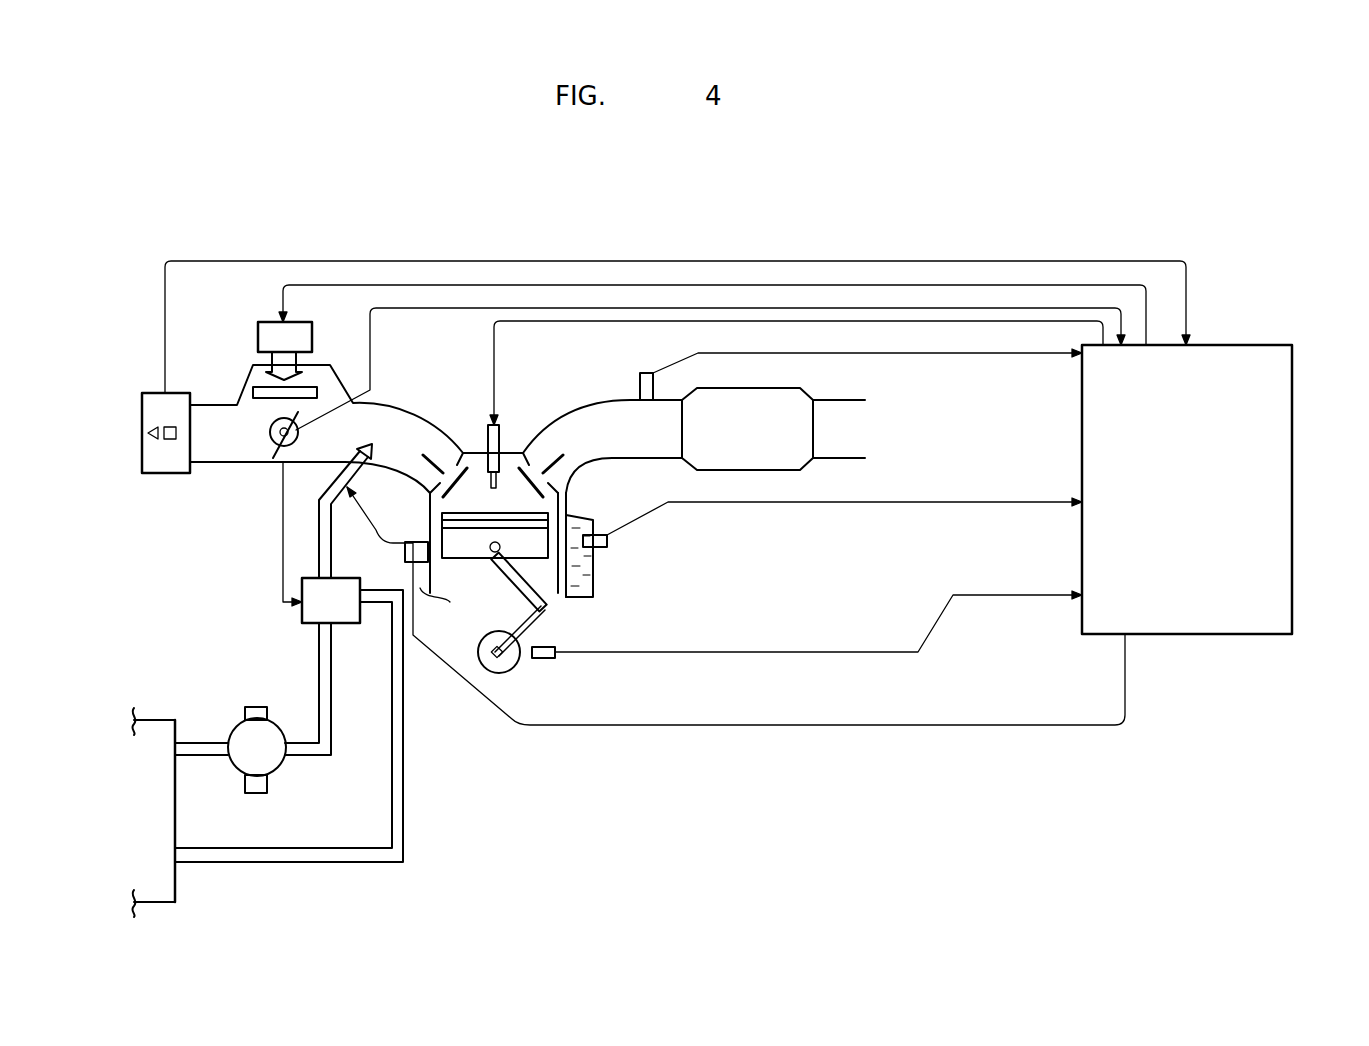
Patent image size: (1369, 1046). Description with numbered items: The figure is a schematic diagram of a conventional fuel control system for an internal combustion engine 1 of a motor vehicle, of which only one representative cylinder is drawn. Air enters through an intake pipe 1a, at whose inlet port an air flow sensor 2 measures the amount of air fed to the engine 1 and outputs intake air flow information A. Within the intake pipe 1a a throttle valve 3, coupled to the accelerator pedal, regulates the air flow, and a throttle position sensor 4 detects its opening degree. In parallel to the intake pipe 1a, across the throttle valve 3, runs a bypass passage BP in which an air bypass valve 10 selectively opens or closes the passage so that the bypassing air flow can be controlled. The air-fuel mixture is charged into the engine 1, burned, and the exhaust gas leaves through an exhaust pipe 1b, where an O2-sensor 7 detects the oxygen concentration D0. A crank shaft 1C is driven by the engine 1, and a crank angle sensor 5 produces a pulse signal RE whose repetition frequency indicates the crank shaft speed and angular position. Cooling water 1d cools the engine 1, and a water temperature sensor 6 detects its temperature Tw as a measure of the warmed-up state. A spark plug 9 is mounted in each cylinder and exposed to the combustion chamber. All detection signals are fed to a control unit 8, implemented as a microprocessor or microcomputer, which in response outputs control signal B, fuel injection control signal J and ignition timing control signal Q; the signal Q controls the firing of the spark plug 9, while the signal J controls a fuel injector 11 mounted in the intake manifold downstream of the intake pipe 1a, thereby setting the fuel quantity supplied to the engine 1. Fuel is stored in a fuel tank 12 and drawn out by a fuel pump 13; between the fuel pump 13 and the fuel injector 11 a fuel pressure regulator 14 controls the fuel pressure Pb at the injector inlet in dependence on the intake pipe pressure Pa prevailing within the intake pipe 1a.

The internal combustion engine 1 is at (600, 566).
The intake pipe 1a is at (436, 414).
The exhaust pipe 1b is at (624, 468).
The crank shaft 1C is at (512, 675).
The cooling water 1d is at (582, 598).
The air flow sensor 2 is at (157, 478).
The throttle valve 3 is at (270, 442).
The throttle position sensor 4 is at (300, 434).
The crank angle sensor 5 is at (546, 662).
The water temperature sensor 6 is at (611, 541).
The O2-sensor 7 is at (639, 383).
The control unit 8 is at (1293, 486).
The spark plug 9 is at (504, 432).
The air bypass valve 10 is at (257, 326).
The fuel injector 11 is at (360, 474).
The fuel tank 12 is at (178, 887).
The fuel pump 13 is at (270, 778).
The fuel pressure regulator 14 is at (300, 610).
The intake air flow information A is at (795, 261).
The control signal B is at (335, 286).
The bypass passage BP is at (256, 364).
The ignition timing control signal Q is at (497, 343).
The oxygen concentration D0 is at (928, 357).
The cooling water temperature Tw is at (922, 502).
The pulse signal RE is at (769, 651).
The fuel injection control signal J is at (832, 724).
The intake pipe pressure Pa is at (280, 535).
The fuel pressure Pb is at (333, 558).